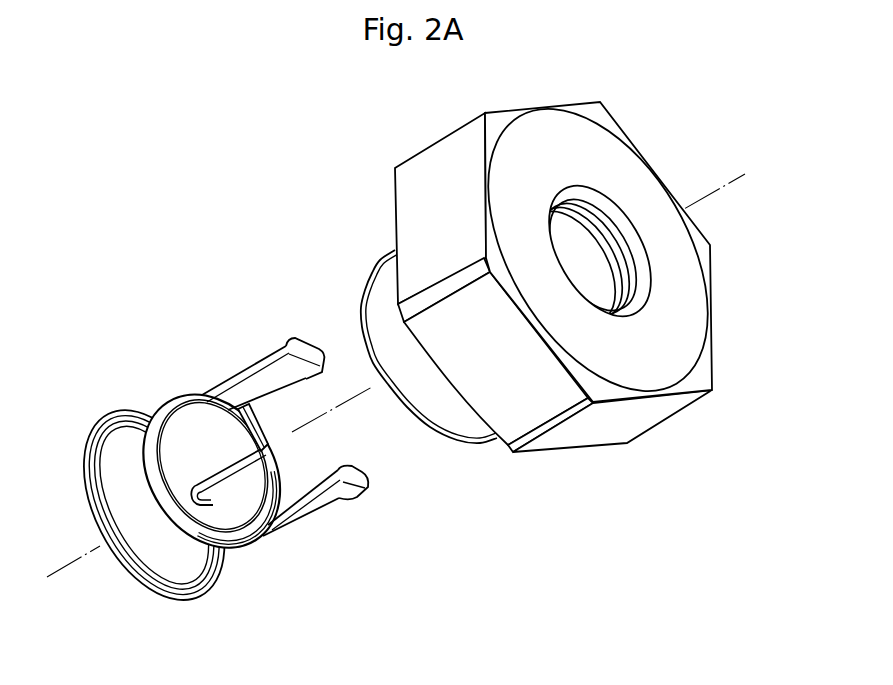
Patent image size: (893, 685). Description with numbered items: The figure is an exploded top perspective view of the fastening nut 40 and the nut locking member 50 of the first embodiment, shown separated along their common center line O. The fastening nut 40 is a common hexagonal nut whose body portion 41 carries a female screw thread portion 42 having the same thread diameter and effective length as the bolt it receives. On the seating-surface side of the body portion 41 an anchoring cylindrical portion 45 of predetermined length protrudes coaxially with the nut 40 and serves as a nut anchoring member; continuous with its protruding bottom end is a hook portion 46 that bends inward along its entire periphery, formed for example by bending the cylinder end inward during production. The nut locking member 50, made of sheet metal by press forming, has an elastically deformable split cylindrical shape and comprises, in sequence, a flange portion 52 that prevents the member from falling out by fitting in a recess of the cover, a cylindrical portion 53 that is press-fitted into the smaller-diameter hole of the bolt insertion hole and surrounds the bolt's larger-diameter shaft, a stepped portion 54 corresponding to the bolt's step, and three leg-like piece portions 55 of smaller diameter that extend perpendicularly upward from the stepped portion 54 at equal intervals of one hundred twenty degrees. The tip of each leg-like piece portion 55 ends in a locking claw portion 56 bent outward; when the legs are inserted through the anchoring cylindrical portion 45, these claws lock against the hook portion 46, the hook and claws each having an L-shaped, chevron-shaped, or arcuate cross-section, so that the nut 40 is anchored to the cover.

The fastening nut 40 is at (528, 288).
The body portion 41 is at (528, 288).
The female screw thread portion 42 is at (625, 278).
The anchoring cylindrical portion 45 is at (453, 417).
The hook portion 46 is at (360, 305).
The nut locking member 50 is at (228, 469).
The flange portion 52 is at (167, 603).
The cylindrical portion 53 is at (244, 505).
The stepped portion 54 is at (257, 553).
The leg-like piece portions 55 is at (240, 382).
The locking claw portion 56 is at (302, 342).
The center line O is at (411, 369).